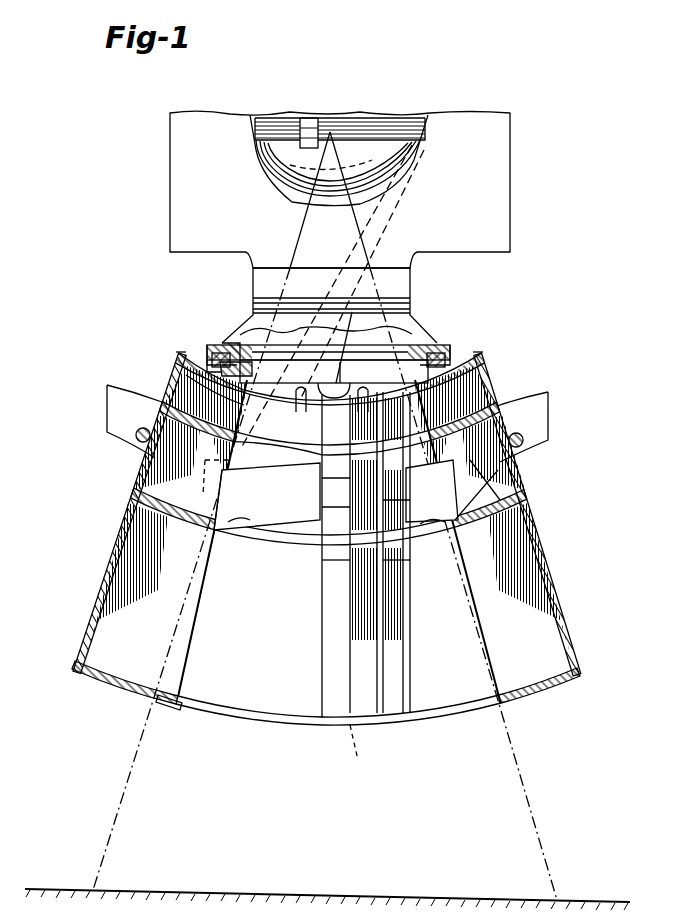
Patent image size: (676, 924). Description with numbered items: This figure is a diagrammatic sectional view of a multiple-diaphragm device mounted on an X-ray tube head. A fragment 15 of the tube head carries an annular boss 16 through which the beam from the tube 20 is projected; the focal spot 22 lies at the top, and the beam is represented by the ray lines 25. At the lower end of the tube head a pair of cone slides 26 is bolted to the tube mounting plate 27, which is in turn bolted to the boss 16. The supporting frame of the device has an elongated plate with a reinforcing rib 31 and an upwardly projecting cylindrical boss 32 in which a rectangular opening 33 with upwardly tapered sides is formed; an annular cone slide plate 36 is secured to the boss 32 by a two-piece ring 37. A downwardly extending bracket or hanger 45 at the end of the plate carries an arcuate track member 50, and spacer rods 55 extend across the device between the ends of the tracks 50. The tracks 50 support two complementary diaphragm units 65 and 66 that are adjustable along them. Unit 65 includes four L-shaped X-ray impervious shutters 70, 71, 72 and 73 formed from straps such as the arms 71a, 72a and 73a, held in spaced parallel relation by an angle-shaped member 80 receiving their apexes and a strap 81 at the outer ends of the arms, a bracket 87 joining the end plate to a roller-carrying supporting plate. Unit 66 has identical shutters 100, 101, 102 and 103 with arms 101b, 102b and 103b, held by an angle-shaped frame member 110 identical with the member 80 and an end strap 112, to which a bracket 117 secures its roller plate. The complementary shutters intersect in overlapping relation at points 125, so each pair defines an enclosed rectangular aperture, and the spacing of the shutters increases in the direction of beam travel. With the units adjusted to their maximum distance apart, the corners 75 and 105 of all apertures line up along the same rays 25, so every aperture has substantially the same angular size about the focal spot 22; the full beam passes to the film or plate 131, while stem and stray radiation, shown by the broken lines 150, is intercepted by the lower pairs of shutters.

The fragment of X-ray tube head 15 is at (172, 165).
The X-ray tube 20 is at (282, 142).
The focal spot 22 is at (338, 126).
The broken lines 150 is at (388, 222).
The ray lines 25 is at (115, 812).
The annular boss 16 is at (410, 330).
The reinforcing rib 31 is at (351, 332).
The bracket or hanger 45 is at (326, 337).
The annular cone slide plate 36 is at (448, 350).
The cone slides 26 is at (215, 355).
The tube mounting plate 27 is at (225, 348).
The two-piece ring 37 is at (215, 361).
The rectangular opening 33 is at (398, 376).
The diaphragm unit 66 is at (97, 551).
The diaphragm unit 65 is at (555, 551).
The frame member 110 is at (103, 613).
The angle-shaped member 80 is at (562, 611).
The shutter 100 is at (178, 370).
The shutter 70 is at (488, 380).
The cylindrical boss 32 is at (210, 397).
The spacer rods 55 is at (132, 432).
The track member 50 is at (548, 412).
The shutter 101 is at (195, 437).
The shutter 71 is at (498, 406).
The shutter 102 is at (135, 502).
The shutter 72 is at (515, 522).
The shutter 103 is at (92, 680).
The shutter 73 is at (550, 688).
The shutter arm 103b is at (256, 724).
The shutter arm 73a is at (437, 720).
The intersection point 75 is at (496, 698).
The aperture corner 105 is at (166, 710).
The shutter arm 102b is at (243, 532).
The shutter arm 72a is at (433, 535).
The shutter arm 101b is at (267, 496).
The shutter arm 71a is at (432, 492).
The bracket 117 is at (465, 474).
The bracket 87 is at (300, 522).
The strap 81 is at (322, 668).
The frame member 112 is at (410, 661).
The intersection point 125 is at (360, 755).
The film or plate 131 is at (277, 888).